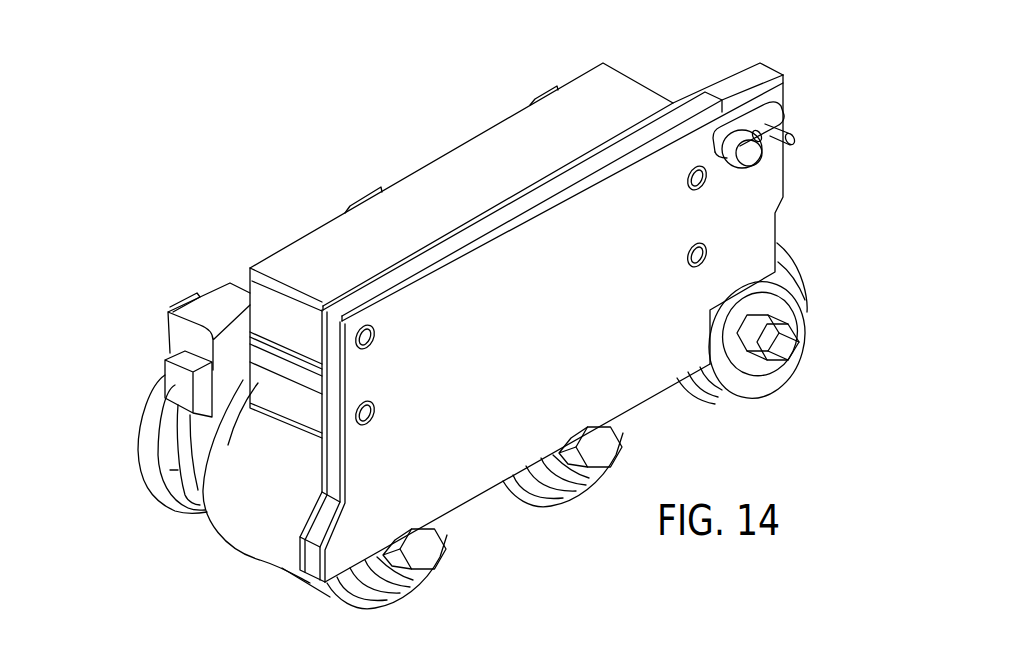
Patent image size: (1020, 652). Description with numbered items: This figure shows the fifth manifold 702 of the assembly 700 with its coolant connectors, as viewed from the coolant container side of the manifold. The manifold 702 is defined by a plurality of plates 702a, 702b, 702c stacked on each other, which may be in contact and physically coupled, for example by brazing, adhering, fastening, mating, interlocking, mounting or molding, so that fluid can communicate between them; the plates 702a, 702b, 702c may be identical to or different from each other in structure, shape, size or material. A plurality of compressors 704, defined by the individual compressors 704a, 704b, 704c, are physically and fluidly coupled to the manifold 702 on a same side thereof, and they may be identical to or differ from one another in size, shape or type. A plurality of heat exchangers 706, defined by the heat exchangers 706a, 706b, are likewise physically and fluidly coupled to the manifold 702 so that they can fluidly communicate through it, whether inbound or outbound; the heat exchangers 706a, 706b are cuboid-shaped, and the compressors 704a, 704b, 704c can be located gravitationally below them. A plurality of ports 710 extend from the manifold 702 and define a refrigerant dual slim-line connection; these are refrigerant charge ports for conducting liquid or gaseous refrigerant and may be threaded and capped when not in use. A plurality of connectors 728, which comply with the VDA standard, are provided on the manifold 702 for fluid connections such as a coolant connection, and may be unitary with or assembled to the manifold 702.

The assembly 700 is at (155, 172).
The fifth manifold 702 is at (692, 95).
The plate 702a is at (782, 92).
The plate 702b is at (769, 77).
The plate 702c is at (740, 70).
The compressors 704 is at (272, 547).
The compressor 704a is at (803, 310).
The compressor 704b is at (625, 450).
The compressor 704c is at (443, 560).
The heat exchangers 706 is at (340, 265).
The heat exchanger 706a is at (270, 314).
The heat exchanger 706b is at (298, 418).
The ports 710 is at (762, 167).
The connectors 728 is at (380, 412).